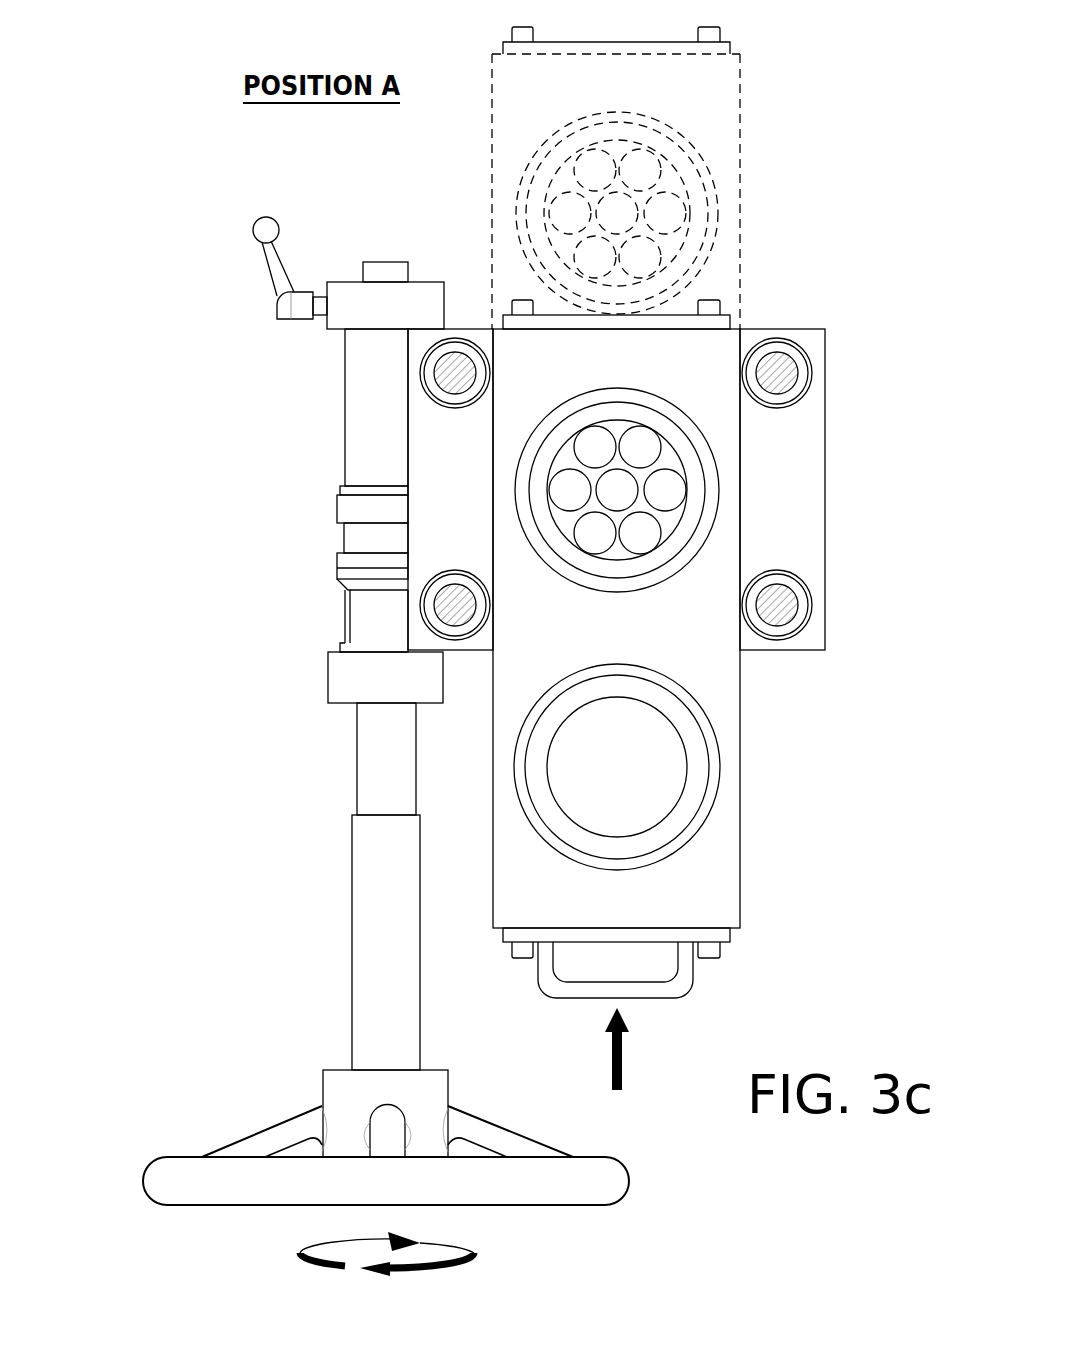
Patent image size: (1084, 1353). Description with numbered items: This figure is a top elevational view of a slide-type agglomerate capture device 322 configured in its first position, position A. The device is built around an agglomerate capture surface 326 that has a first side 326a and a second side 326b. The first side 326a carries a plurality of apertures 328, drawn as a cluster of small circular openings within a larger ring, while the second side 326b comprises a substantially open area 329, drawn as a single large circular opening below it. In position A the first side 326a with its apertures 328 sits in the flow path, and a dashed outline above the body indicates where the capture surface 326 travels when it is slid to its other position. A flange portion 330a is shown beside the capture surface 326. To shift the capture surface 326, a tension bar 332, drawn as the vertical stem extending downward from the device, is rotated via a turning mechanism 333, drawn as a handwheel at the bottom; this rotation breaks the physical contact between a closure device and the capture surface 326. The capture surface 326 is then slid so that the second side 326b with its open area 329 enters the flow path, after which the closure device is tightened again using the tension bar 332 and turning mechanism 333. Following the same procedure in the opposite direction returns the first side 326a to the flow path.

The agglomerate capture device 322 is at (162, 288).
The agglomerate capture surface 326 is at (699, 684).
The first side 326a is at (701, 547).
The second side 326b is at (699, 821).
The apertures 328 is at (598, 445).
The substantially open area 329 is at (628, 815).
The mounting flange 330a is at (813, 413).
The tension bar 332 is at (374, 763).
The turning mechanism 333 is at (570, 1190).